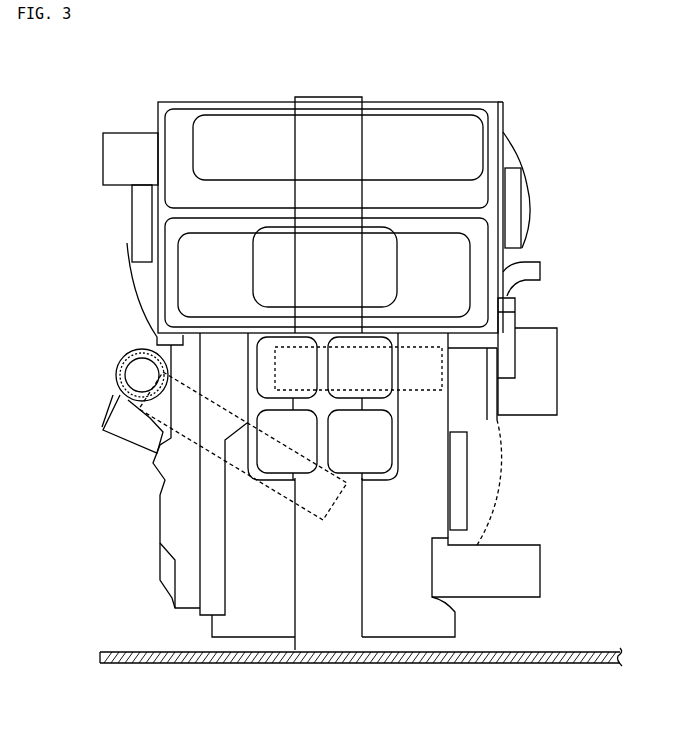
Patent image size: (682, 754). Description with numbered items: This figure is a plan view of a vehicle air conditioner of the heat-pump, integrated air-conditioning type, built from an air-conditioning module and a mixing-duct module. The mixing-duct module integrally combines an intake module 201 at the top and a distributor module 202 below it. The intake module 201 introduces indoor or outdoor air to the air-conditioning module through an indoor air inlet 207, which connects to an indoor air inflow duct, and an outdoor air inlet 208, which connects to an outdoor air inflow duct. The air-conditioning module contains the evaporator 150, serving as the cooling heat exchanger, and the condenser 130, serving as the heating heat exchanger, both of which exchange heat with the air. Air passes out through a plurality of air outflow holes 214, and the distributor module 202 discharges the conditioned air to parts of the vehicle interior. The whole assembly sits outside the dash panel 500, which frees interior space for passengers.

The intake module 201 is at (495, 136).
The outdoor air inlet 208 is at (396, 122).
The indoor air inlet 207 is at (345, 235).
The evaporator 150 is at (445, 370).
The air outflow holes 214 is at (116, 373).
The condenser 130 is at (168, 448).
The distributor module 202 is at (458, 518).
The dash panel 500 is at (563, 665).